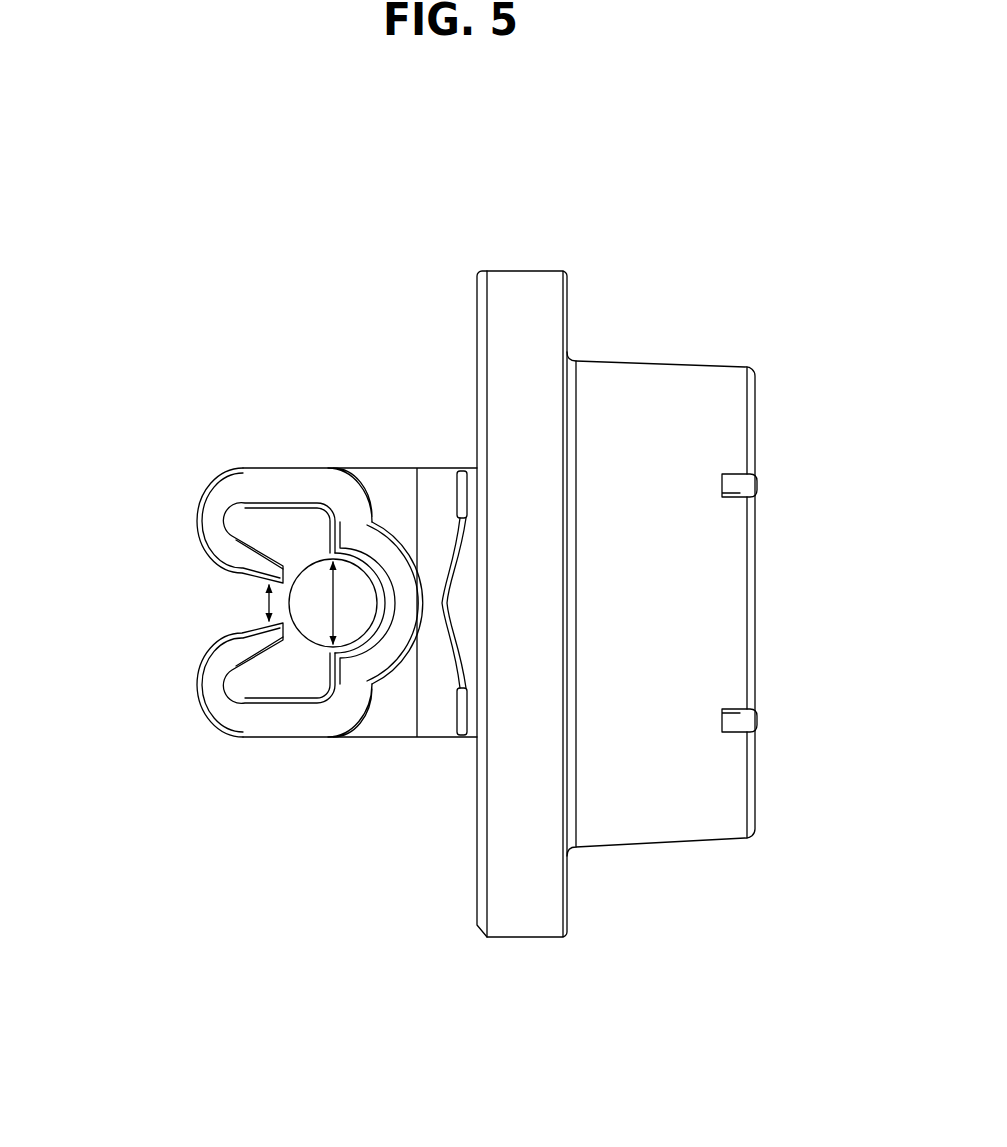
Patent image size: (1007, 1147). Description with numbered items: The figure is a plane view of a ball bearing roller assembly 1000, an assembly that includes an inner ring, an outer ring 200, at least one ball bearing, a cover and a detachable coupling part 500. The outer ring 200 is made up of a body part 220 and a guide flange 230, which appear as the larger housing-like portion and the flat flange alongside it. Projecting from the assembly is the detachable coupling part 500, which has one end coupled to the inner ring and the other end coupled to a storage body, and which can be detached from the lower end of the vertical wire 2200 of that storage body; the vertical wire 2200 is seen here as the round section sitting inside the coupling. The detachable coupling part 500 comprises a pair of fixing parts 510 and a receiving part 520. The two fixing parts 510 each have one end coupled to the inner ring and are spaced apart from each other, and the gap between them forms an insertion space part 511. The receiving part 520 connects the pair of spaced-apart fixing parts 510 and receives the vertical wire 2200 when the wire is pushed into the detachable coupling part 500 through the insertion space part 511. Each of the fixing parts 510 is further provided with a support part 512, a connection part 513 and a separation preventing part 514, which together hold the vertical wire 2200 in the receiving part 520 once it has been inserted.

The ball bearing roller assembly 1000 is at (210, 224).
The outer ring 200 is at (690, 337).
The body part 220 is at (663, 785).
The guide flange 230 is at (532, 905).
The vertical wire 2200 is at (312, 598).
The detachable coupling part 500 is at (285, 750).
The fixing part 510 is at (195, 512).
The insertion space part 511 is at (262, 602).
The support part 512 is at (333, 713).
The connection part 513 is at (218, 688).
The separation preventing part 514 is at (268, 638).
The receiving part 520 is at (402, 607).